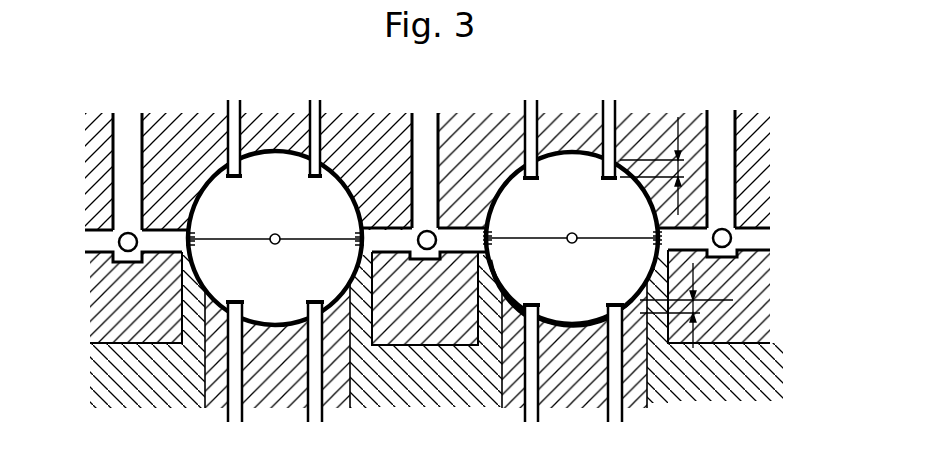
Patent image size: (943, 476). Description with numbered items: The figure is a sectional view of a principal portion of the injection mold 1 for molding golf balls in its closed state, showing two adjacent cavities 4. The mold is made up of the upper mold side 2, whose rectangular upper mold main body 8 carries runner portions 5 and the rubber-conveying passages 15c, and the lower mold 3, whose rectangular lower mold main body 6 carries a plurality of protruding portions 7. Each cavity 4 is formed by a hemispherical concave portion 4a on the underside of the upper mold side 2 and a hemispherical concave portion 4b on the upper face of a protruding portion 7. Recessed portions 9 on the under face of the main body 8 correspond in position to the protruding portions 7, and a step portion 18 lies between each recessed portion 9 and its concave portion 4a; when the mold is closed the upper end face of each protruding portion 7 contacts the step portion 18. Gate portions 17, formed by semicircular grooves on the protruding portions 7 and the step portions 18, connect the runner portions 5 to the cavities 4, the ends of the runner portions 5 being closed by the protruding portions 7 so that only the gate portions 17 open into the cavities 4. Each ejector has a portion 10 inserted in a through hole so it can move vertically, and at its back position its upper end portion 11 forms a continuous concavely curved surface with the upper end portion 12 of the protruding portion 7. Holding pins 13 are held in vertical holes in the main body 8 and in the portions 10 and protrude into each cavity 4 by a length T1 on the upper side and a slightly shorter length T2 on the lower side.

The mold 1 is at (769, 96).
The upper mold side 2 is at (442, 320).
The lower mold 3 is at (722, 349).
The cavity 4 is at (585, 191).
The hemispherical concave portion 4a is at (202, 200).
The hemispherical concave portion 4b is at (202, 270).
The runner portion 5 is at (163, 218).
The lower mold main body 6 is at (430, 401).
The protruding portion 7 is at (178, 283).
The upper mold main body 8 is at (385, 145).
The recessed portion 9 is at (196, 320).
The portion for moving back and forth of the ejector 10 is at (286, 383).
The upper end portion 11 is at (550, 320).
The upper end portion 12 is at (500, 280).
The holding pin 13 is at (305, 118).
The passage 15c is at (113, 152).
The gate portion 17 is at (362, 240).
The step portion 18 is at (507, 245).
The protruding length T1 is at (675, 162).
The protruding length T2 is at (701, 305).